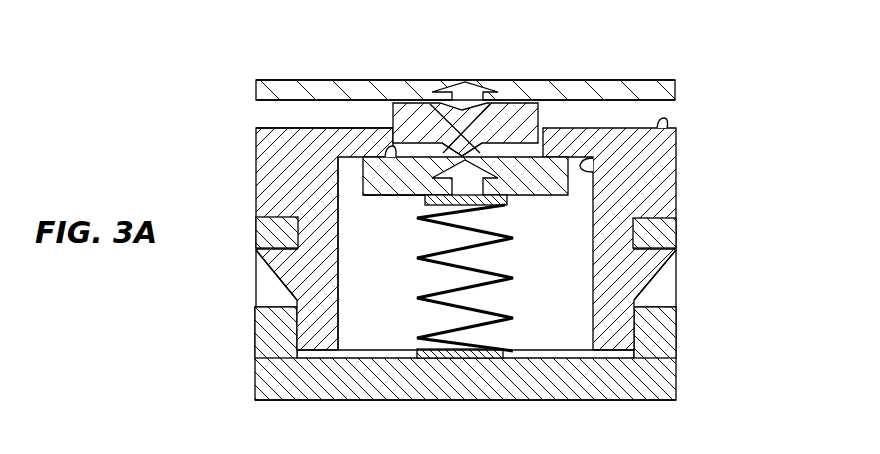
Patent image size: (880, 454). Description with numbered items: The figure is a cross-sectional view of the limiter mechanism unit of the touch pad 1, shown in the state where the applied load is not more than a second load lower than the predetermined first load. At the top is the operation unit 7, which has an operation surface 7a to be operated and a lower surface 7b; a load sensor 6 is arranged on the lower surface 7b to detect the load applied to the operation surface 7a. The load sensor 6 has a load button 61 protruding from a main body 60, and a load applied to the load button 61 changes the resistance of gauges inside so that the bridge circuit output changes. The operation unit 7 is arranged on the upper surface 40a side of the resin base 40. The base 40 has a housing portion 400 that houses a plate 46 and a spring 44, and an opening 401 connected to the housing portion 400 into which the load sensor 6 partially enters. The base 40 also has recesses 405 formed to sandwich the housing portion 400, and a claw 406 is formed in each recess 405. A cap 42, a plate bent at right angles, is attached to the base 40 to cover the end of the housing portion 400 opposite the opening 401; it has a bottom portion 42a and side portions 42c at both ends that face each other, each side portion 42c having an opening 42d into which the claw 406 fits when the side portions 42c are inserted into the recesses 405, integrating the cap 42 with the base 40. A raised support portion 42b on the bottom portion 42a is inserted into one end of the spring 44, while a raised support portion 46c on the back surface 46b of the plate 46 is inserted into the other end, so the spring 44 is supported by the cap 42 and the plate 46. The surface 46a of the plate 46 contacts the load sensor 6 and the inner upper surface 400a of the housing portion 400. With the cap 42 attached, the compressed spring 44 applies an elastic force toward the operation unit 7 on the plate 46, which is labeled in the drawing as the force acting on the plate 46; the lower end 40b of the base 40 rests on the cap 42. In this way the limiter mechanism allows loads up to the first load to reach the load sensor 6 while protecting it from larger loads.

The touch pad 1 is at (748, 62).
The load sensor 6 is at (430, 87).
The main body 60 is at (437, 97).
The load button 61 is at (443, 147).
The operation unit 7 is at (668, 92).
The operation surface 7a is at (657, 80).
The lower surface 7b is at (660, 102).
The base 40 is at (660, 163).
The upper surface 40a is at (666, 123).
The lower end of housing body 40b is at (610, 353).
The housing portion 400 is at (338, 202).
The inner upper surface 400a is at (578, 170).
The opening 401 is at (393, 122).
The recess 405 is at (290, 223).
The claw 406 is at (280, 263).
The cap 42 is at (677, 366).
The bottom portion 42a is at (567, 387).
The support portion 42b is at (447, 353).
The side portion 42c is at (265, 327).
The opening 42d is at (268, 288).
The spring 44 is at (510, 318).
The plate 46 is at (370, 178).
The surface 46a is at (385, 146).
The back surface 46b is at (395, 196).
The support portion 46c is at (423, 210).